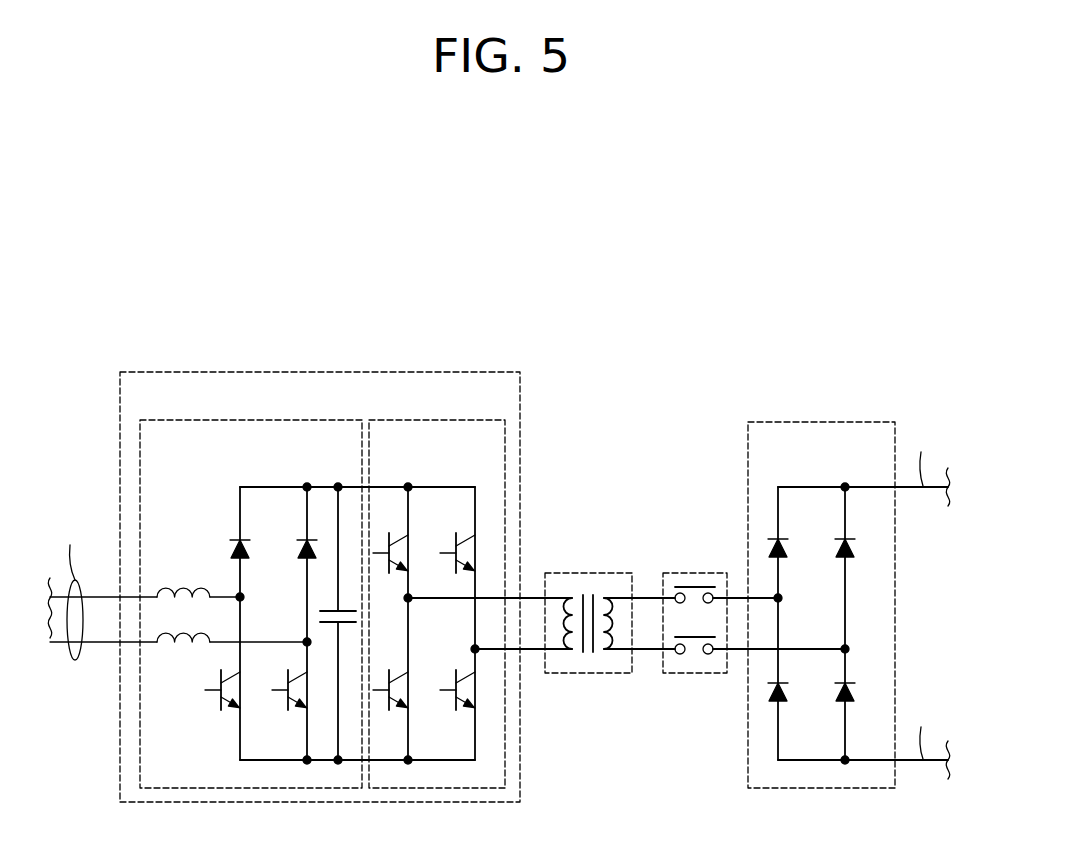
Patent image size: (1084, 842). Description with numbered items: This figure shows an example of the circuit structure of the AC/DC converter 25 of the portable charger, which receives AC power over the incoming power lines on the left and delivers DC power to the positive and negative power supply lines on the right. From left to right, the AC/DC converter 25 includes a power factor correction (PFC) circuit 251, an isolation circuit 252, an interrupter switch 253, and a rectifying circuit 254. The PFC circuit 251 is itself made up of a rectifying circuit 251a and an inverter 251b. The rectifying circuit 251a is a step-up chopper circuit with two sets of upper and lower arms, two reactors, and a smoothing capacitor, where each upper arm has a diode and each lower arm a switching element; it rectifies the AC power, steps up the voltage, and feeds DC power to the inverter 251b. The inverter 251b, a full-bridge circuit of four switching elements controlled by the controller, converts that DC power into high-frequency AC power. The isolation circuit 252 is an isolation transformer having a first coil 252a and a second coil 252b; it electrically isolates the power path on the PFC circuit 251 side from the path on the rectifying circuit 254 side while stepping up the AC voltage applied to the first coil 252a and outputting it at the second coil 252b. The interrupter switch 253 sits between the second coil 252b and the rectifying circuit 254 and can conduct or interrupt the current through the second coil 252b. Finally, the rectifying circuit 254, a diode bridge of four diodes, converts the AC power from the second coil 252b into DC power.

The AC/DC converter 25 is at (690, 227).
The power factor correction (PFC) circuit 251 is at (505, 285).
The rectifying circuit 251a is at (308, 420).
The inverter 251b is at (472, 420).
The isolation circuit 252 is at (590, 573).
The first coil 252a is at (565, 673).
The second coil 252b is at (617, 673).
The interrupter switch 253 is at (700, 573).
The rectifying circuit 254 is at (814, 421).